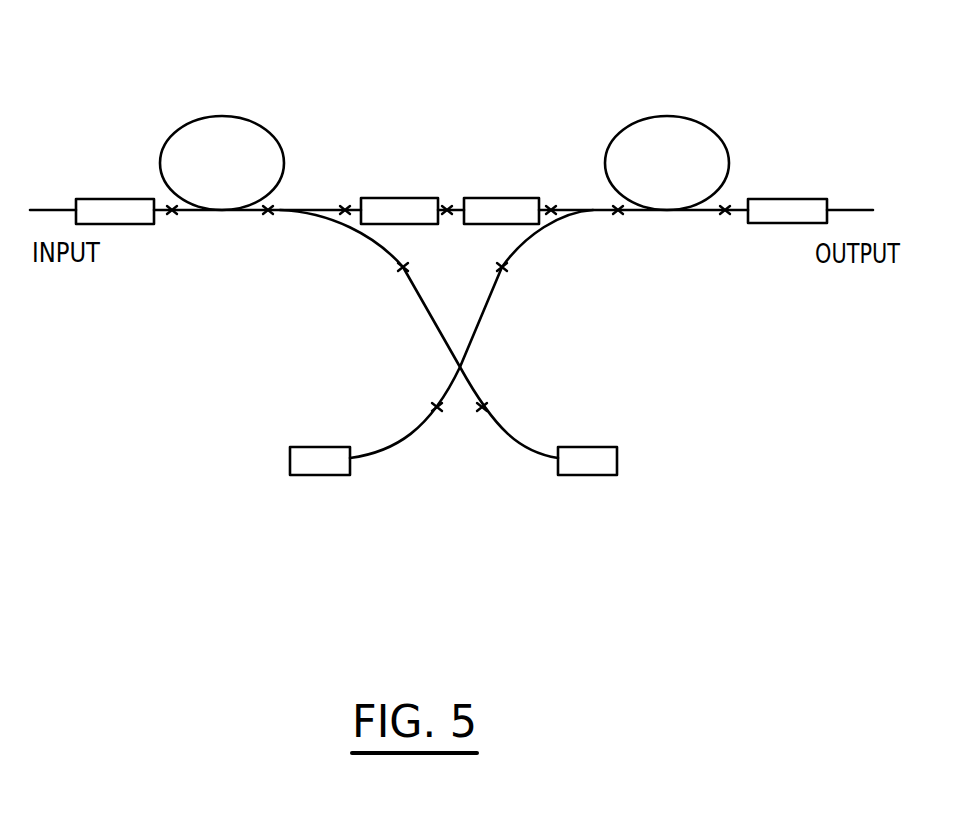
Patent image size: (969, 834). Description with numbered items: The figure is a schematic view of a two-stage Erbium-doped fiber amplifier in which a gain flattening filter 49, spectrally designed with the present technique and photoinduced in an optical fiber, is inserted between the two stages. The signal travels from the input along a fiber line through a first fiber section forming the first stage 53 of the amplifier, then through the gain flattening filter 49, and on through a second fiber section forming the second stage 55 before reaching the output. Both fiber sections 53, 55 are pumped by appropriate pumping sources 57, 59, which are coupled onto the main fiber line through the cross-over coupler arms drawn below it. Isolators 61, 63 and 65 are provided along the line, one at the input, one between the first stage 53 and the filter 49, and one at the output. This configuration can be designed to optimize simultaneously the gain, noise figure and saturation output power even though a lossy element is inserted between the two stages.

The gain flattening filter 49 is at (500, 208).
The first stage of the Erbium-doped fiber amplifier 53 is at (220, 115).
The second stage of the Erbium-doped fiber amplifier 55 is at (672, 117).
The pumping source 57 is at (595, 457).
The pumping source 59 is at (307, 452).
The isolator 61 is at (116, 210).
The isolator 63 is at (403, 218).
The isolator 65 is at (797, 208).